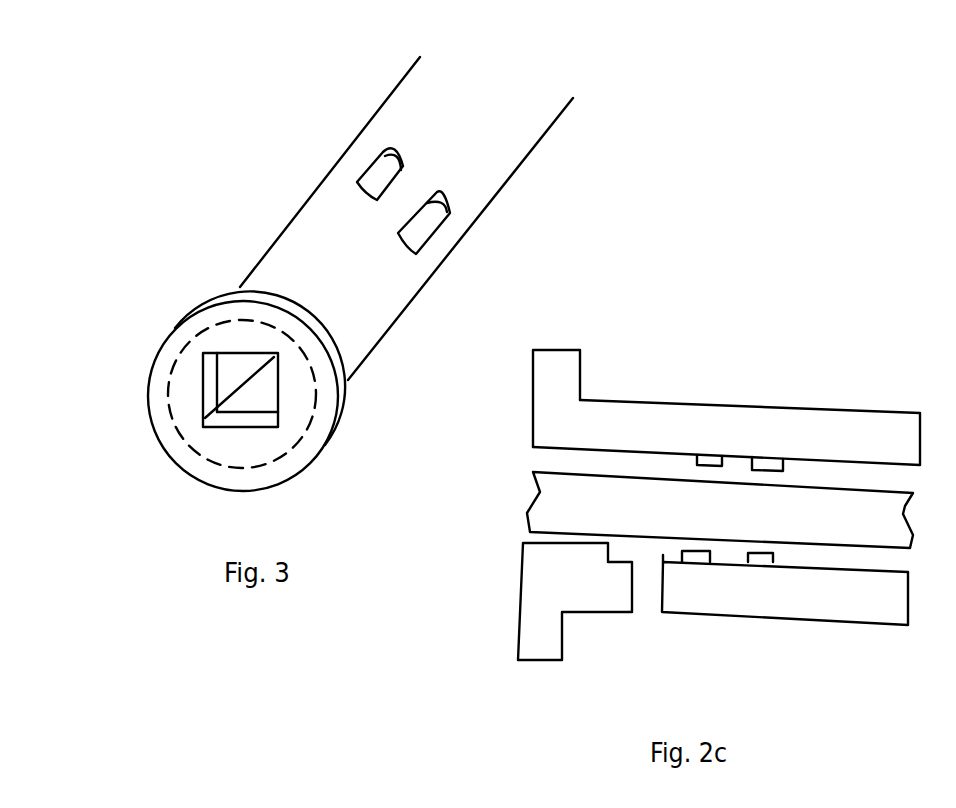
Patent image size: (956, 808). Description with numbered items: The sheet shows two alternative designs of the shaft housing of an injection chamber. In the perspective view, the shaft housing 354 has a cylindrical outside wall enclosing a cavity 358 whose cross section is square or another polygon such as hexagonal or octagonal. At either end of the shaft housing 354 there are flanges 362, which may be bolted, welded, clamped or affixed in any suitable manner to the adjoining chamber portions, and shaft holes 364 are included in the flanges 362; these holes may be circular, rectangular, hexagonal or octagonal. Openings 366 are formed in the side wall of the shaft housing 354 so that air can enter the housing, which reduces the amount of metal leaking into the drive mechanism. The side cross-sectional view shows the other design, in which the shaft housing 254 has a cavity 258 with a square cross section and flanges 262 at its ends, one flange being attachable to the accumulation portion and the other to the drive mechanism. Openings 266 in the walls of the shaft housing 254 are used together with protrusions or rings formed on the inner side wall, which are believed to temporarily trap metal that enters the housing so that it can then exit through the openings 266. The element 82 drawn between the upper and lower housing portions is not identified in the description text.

In FIG. 3, the shaft housing 354 is at (321, 191).
In FIG. 3, the flanges 362 is at (350, 398).
In FIG. 3, the shaft holes 364 is at (207, 385).
In FIG. 3, the openings 366 is at (380, 152).
In FIG. 3, the cavity 358 is at (417, 224).
In FIG. 2C, the flanges 262 is at (557, 350).
In FIG. 2C, the shaft housing 254 is at (712, 402).
In FIG. 2C, the cavity 258 is at (818, 472).
In FIG. 2C, the circuit board 82 is at (770, 523).
In FIG. 2C, the openings 266 is at (643, 608).